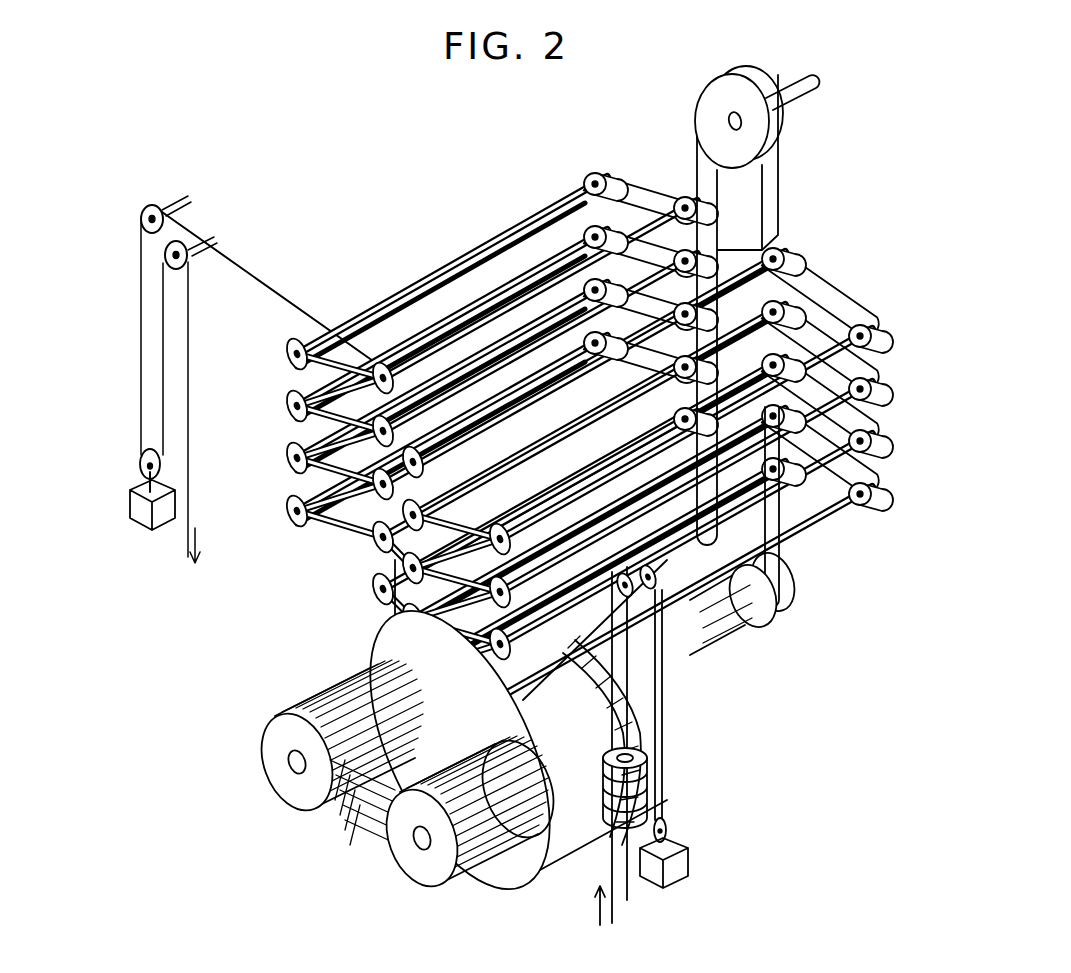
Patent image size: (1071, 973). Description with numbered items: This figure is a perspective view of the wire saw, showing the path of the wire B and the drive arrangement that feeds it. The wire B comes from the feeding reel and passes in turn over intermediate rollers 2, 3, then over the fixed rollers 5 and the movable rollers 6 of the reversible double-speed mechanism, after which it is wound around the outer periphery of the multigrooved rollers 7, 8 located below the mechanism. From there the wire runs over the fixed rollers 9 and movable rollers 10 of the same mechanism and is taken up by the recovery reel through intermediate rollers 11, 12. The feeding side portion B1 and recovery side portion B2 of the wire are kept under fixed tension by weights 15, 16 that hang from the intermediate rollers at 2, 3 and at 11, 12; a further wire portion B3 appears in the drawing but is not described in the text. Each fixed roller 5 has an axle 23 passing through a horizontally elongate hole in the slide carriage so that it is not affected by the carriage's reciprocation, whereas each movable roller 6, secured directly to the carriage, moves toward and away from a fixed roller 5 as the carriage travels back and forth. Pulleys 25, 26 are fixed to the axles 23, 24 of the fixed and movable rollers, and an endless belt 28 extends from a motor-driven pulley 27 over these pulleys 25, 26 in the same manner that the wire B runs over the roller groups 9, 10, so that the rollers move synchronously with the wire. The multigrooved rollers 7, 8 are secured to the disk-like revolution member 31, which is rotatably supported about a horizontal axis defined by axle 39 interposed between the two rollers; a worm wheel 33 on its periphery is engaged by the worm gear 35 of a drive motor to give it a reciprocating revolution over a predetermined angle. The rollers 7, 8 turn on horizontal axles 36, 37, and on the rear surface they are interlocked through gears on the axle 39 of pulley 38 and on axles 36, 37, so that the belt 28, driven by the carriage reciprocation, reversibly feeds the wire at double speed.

The intermediate roller 2 is at (668, 655).
The intermediate roller 3 is at (692, 640).
The fixed roller 5 is at (404, 568).
The movable roller 6 is at (570, 878).
The multigrooved roller 7 is at (430, 876).
The multigrooved roller 8 is at (275, 759).
The fixed roller 9 is at (379, 368).
The movable roller 10 is at (288, 356).
The intermediate roller 11 is at (140, 215).
The intermediate roller 12 is at (185, 265).
The weight 15 is at (666, 862).
The weight 16 is at (130, 501).
The axle 23 is at (527, 350).
The axle 24 is at (440, 323).
The pulley 25 is at (680, 200).
The pulley 26 is at (590, 180).
The pulley 27 is at (700, 112).
The endless belt 28 is at (780, 176).
The revolution member 31 is at (493, 892).
The worm wheel 33 is at (600, 715).
The worm gear 35 is at (655, 792).
The horizontal axle 36 is at (418, 848).
The horizontal axle 37 is at (292, 770).
The pulley 38 is at (772, 622).
The axle 39 is at (712, 607).
The wire B is at (270, 292).
The feeding side portion B1 is at (392, 672).
The recovery side portion B2 is at (395, 622).
The band section B3 is at (352, 822).